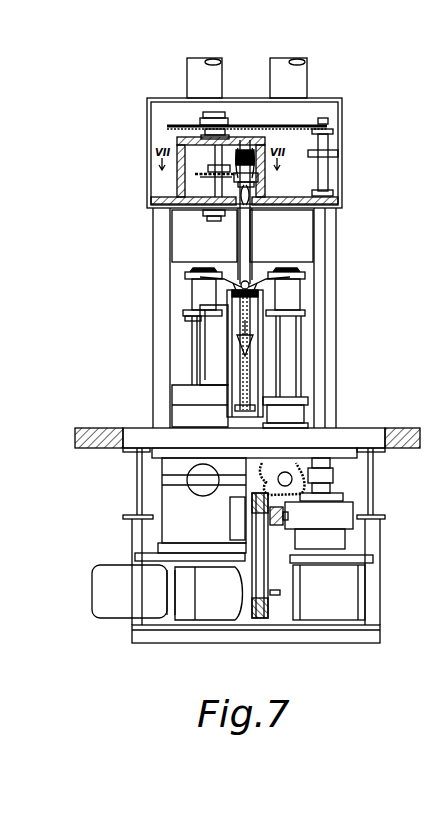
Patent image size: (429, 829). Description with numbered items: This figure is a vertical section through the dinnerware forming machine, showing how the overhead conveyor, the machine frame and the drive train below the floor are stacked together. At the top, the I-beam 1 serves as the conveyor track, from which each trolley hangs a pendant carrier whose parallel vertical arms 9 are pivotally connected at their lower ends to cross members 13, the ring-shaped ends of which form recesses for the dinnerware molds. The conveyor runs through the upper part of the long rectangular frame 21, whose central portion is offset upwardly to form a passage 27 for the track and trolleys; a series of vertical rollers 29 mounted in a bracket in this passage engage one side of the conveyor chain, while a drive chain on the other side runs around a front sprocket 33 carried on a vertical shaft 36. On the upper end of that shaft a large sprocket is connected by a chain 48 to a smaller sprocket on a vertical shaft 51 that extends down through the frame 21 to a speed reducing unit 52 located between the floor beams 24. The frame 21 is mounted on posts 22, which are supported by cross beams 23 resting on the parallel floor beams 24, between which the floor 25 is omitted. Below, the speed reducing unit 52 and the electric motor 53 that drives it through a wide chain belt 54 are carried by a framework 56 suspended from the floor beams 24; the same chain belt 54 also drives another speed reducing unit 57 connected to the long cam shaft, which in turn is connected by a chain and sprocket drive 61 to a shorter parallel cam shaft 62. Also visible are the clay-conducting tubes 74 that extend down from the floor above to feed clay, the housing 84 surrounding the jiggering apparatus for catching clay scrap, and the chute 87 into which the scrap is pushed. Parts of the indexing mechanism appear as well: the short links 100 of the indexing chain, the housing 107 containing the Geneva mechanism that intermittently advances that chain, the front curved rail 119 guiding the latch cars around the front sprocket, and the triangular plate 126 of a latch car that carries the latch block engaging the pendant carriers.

The I-beam 1 is at (248, 140).
The vertical arms 9 is at (250, 250).
The cross members 13 is at (232, 282).
The frame 21 is at (338, 100).
The posts 22 is at (330, 275).
The cross beams 23 is at (353, 435).
The floor beams 24 is at (135, 463).
The floor 25 is at (73, 437).
The passage 27 is at (250, 148).
The vertical rollers 29 is at (258, 176).
The front sprocket 33 is at (170, 202).
The vertical shaft 36 is at (210, 158).
The chain 48 is at (236, 124).
The vertical shaft 51 is at (333, 121).
The speed reducing unit 52 is at (333, 513).
The electric motor 53 is at (185, 608).
The chain belt 54 is at (272, 605).
The framework 56 is at (345, 633).
The speed reducing unit 57 is at (168, 500).
The chain and sprocket drive 61 is at (253, 460).
The cam shaft 62 is at (288, 475).
The clay-conducting tubes 74 is at (273, 58).
The housing 84 is at (178, 240).
The chute 87 is at (178, 372).
The short links 100 is at (243, 315).
The housing 107 is at (208, 333).
The front curved rail 119 is at (258, 345).
The triangular plate 126 is at (243, 343).